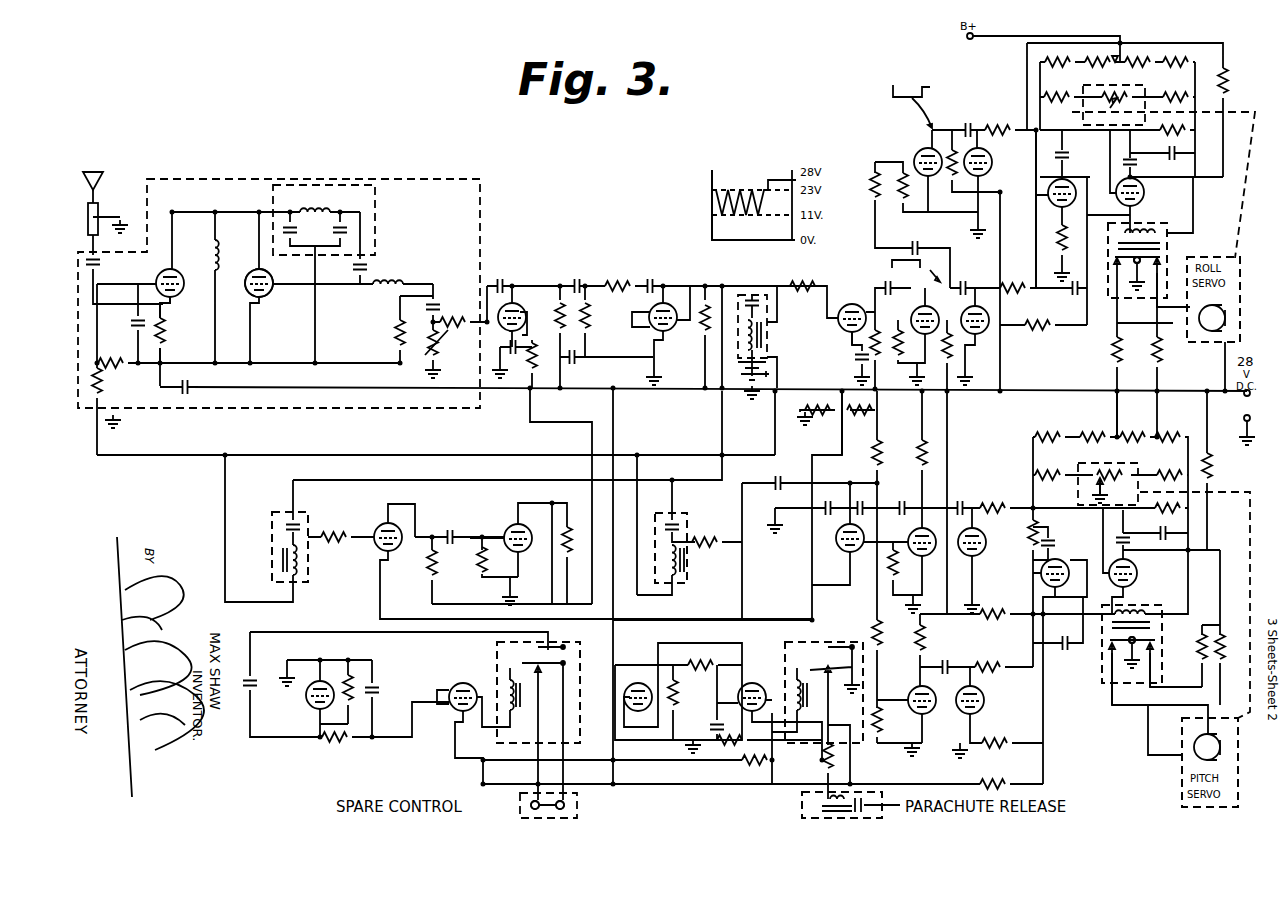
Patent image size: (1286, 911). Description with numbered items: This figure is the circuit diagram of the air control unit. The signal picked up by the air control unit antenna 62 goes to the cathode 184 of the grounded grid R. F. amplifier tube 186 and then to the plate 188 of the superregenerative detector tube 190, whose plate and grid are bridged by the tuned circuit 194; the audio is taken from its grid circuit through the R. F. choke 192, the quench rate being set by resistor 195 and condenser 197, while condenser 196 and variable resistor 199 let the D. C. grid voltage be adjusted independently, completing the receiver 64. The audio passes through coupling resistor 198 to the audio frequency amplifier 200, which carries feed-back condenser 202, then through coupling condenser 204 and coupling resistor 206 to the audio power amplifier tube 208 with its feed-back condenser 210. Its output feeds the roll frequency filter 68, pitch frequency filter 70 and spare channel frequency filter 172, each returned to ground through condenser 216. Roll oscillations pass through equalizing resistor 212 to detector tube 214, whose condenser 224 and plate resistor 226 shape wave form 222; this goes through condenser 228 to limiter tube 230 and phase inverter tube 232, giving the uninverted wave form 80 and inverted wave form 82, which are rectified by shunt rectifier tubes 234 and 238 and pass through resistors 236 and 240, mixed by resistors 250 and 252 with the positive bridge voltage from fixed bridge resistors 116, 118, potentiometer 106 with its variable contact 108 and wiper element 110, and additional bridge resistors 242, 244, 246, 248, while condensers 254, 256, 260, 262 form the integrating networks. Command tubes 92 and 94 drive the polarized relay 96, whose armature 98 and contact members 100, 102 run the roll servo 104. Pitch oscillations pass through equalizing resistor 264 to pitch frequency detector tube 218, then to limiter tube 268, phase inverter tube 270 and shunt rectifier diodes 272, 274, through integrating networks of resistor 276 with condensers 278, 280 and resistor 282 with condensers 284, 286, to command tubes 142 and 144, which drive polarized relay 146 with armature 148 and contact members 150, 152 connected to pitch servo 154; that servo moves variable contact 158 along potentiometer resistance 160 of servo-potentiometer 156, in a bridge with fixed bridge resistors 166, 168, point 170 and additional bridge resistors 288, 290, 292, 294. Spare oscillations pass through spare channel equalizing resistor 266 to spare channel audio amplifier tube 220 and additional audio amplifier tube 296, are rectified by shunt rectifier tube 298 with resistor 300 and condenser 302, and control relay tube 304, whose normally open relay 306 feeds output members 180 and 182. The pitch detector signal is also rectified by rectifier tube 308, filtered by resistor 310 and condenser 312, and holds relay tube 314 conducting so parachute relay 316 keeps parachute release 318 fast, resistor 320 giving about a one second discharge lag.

The air control unit antenna 62 is at (98, 172).
The receiver 64 is at (305, 179).
The roll frequency filter 68 is at (768, 345).
The pitch frequency filter 70 is at (684, 525).
The uninverted wave form 80 is at (890, 262).
The inverted wave form 82 is at (912, 92).
The command tube 92 is at (1052, 205).
The command tube 94 is at (1144, 192).
The polarized relay 96 is at (1137, 223).
The armature 98 is at (1141, 259).
The contact member 100 is at (1152, 292).
The contact member 102 is at (1108, 328).
The roll servo 104 is at (1210, 256).
The potentiometer 106 is at (1120, 93).
The variable contact 108 is at (1108, 106).
The wiper 110 is at (1110, 96).
The fixed bridge resistor 116 is at (1108, 54).
The fixed bridge resistor 118 is at (1138, 55).
The command tube 142 is at (1137, 580).
The command tube 144 is at (1065, 562).
The polarized relay 146 is at (1110, 690).
The armature 148 is at (1140, 640).
The contact member 150 is at (1112, 680).
The contact member 152 is at (1153, 668).
The pitch servo 154 is at (1182, 782).
The servo-potentiometer 156 is at (1112, 472).
The variable contact 158 is at (1095, 492).
The potentiometer resistance 160 is at (1100, 476).
The fixed bridge resistor 166 is at (1138, 434).
The fixed bridge resistor 168 is at (1098, 428).
The point 170 is at (1118, 432).
The spare channel frequency filter 172 is at (272, 536).
The output member 180 is at (545, 806).
The output member 182 is at (565, 802).
The cathode 184 is at (167, 300).
The grounded grid R. F. amplifier tube 186 is at (175, 270).
The plate 188 is at (255, 272).
The superregenerative detector tube 190 is at (267, 290).
The R. F. choke 192 is at (390, 280).
The tuned circuit 194 is at (376, 215).
The resistor 195 is at (396, 338).
The condenser 196 is at (437, 303).
The condenser 197 is at (366, 264).
The coupling resistor 198 is at (438, 337).
The resistor 199 is at (436, 356).
The audio frequency amplifier 200 is at (528, 309).
The high frequency degenerative feed-back condenser 202 is at (505, 282).
The coupling condenser 204 is at (578, 282).
The coupling resistor 206 is at (615, 281).
The audio power amplifier tube 208 is at (677, 310).
The high frequency degenerative feed-back condenser 210 is at (653, 282).
The equalizing resistor 212 is at (806, 283).
The detector tube 214 is at (850, 334).
The condenser 216 is at (748, 388).
The pitch frequency detector tube 218 is at (852, 553).
The spare channel audio amplifier tube 220 is at (377, 527).
The wave form 222 is at (740, 185).
The condenser 224 is at (856, 360).
The plate resistor 226 is at (885, 396).
The condenser 228 is at (870, 282).
The limiter tube 230 is at (925, 306).
The phase inverter tube 232 is at (916, 152).
The shunt rectifier tube 234 is at (978, 334).
The resistor 236 is at (1012, 284).
The shunt rectifier tube 238 is at (988, 154).
The resistor 240 is at (1000, 126).
The additional bridge resistor 242 is at (1050, 60).
The additional bridge resistor 244 is at (1178, 55).
The additional bridge resistor 246 is at (1058, 94).
The additional bridge resistor 248 is at (1175, 94).
The resistor 250 is at (1036, 170).
The resistor 252 is at (1178, 122).
The condenser 254 is at (1066, 155).
The condenser 256 is at (1072, 292).
The condenser 260 is at (1176, 158).
The condenser 262 is at (1136, 163).
The equalizing resistor 264 is at (708, 548).
The spare channel equalizing resistor 266 is at (336, 542).
The limiter tube 268 is at (909, 534).
The phase inverter tube 270 is at (930, 711).
The shunt rectifier diode 272 is at (986, 542).
The shunt rectifier diode 274 is at (984, 700).
The resistor 276 is at (995, 504).
The condenser 278 is at (1130, 545).
The condenser 280 is at (1160, 533).
The resistor 282 is at (990, 663).
The condenser 284 is at (1052, 540).
The condenser 286 is at (1067, 650).
The additional bridge resistor 288 is at (1173, 433).
The additional bridge resistor 290 is at (1048, 434).
The additional bridge resistor 292 is at (1163, 472).
The additional bridge resistor 294 is at (1050, 472).
The additional audio amplifier tube 296 is at (510, 527).
The shunt rectifier tube 298 is at (308, 702).
The resistor 300 is at (338, 742).
The condenser 302 is at (376, 684).
The relay tube 304 is at (452, 690).
The relay 306 is at (580, 652).
The rectifier tube 308 is at (640, 683).
The resistor 310 is at (700, 660).
The condenser 312 is at (712, 726).
The relay tube 314 is at (745, 684).
The parachute relay 316 is at (830, 642).
The parachute release 318 is at (802, 806).
The resistor 320 is at (676, 697).